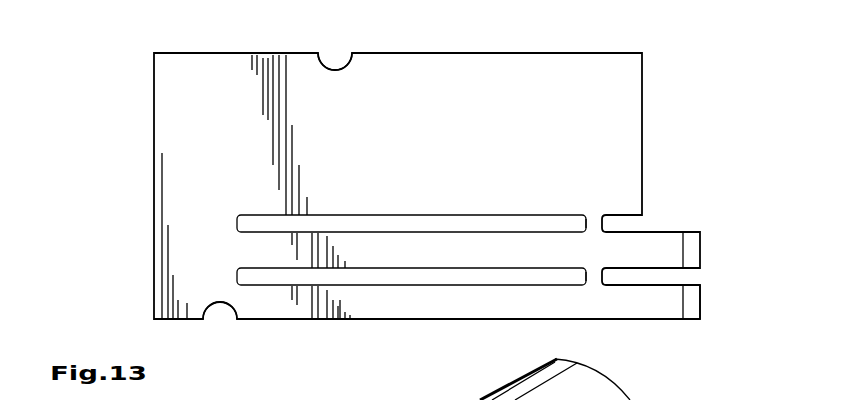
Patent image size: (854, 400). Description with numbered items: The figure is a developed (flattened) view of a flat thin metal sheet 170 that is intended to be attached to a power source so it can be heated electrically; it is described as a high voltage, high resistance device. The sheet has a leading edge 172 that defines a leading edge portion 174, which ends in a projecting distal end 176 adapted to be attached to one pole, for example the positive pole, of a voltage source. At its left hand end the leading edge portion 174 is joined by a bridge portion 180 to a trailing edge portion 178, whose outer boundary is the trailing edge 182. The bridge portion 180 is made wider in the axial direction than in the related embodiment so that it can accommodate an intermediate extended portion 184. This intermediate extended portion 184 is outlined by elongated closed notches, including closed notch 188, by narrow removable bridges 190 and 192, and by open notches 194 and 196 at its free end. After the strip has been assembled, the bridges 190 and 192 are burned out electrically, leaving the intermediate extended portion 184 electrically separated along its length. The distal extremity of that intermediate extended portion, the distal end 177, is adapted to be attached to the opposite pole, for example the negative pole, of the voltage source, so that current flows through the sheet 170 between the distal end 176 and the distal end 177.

The flat thin metal sheet 170 is at (658, 133).
The leading edge 172 is at (207, 308).
The leading edge portion 174 is at (363, 295).
The distal end 176 is at (672, 307).
The distal end 177 is at (670, 245).
The trailing edge portion 178 is at (198, 132).
The bridge portion 180 is at (192, 266).
The trailing edge 182 is at (347, 53).
The intermediate extended portion 184 is at (627, 245).
The elongated closed notch 188 is at (275, 222).
The narrow removable bridge 190 is at (593, 225).
The narrow removable bridge 192 is at (592, 275).
The open notch 194 is at (692, 273).
The open notch 196 is at (278, 278).